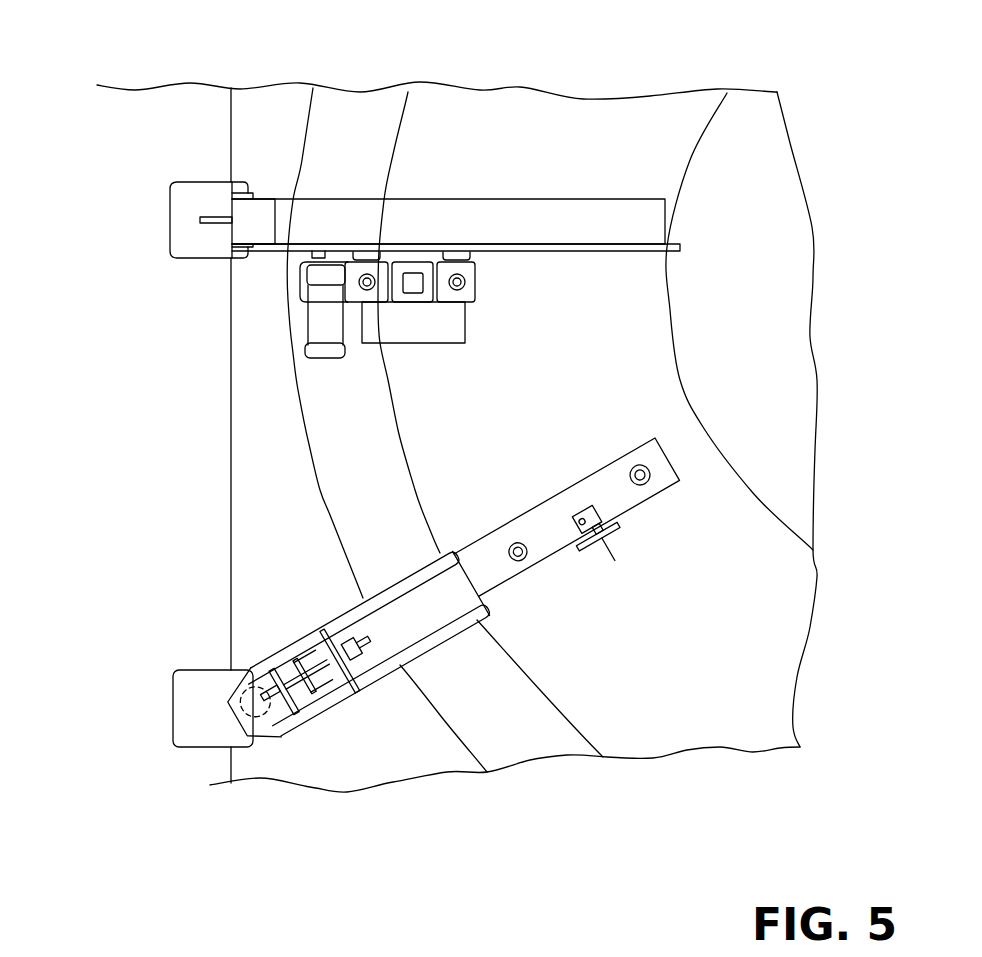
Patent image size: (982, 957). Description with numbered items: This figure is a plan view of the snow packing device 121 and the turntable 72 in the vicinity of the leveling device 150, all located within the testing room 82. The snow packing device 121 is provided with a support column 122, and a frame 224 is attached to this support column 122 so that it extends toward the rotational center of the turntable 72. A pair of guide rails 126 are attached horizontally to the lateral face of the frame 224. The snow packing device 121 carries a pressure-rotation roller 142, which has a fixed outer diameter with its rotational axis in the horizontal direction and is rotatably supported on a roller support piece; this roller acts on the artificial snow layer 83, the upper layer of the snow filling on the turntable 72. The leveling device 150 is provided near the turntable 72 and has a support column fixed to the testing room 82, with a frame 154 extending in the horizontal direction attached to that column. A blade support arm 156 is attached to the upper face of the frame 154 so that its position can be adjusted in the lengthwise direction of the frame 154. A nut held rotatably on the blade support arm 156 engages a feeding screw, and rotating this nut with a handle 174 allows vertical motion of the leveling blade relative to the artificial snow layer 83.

The testing room 82 is at (190, 122).
The artificial snow layer 83 is at (743, 707).
The turntable 72 is at (330, 526).
The snow packing device 121 is at (168, 216).
The support column 122 is at (200, 260).
The guide rails 126 is at (641, 255).
The pressure-rotation roller 142 is at (432, 343).
The leveling device 150 is at (494, 603).
The frame 154 is at (318, 716).
The blade support arm 156 is at (507, 583).
The handle 174 is at (608, 533).
The frame 224 is at (563, 198).